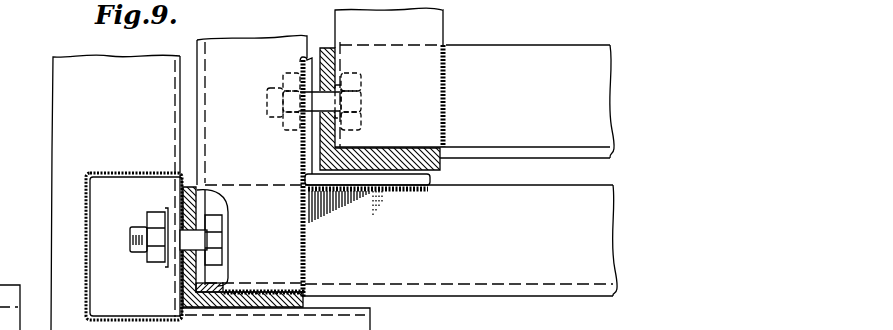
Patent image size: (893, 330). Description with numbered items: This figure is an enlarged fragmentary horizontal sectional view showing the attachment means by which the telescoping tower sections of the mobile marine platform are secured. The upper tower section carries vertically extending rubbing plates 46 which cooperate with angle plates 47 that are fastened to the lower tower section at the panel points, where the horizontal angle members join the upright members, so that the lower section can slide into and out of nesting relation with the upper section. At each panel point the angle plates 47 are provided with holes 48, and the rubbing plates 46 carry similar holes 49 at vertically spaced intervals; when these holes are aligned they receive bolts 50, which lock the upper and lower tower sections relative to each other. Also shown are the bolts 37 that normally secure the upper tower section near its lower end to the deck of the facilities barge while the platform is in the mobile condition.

The bolts 37 is at (130, 234).
The rubbing plates 46 is at (397, 181).
The angle plates 47 is at (370, 158).
The holes 48 is at (312, 73).
The holes 49 is at (338, 82).
The bolts 50 is at (276, 120).